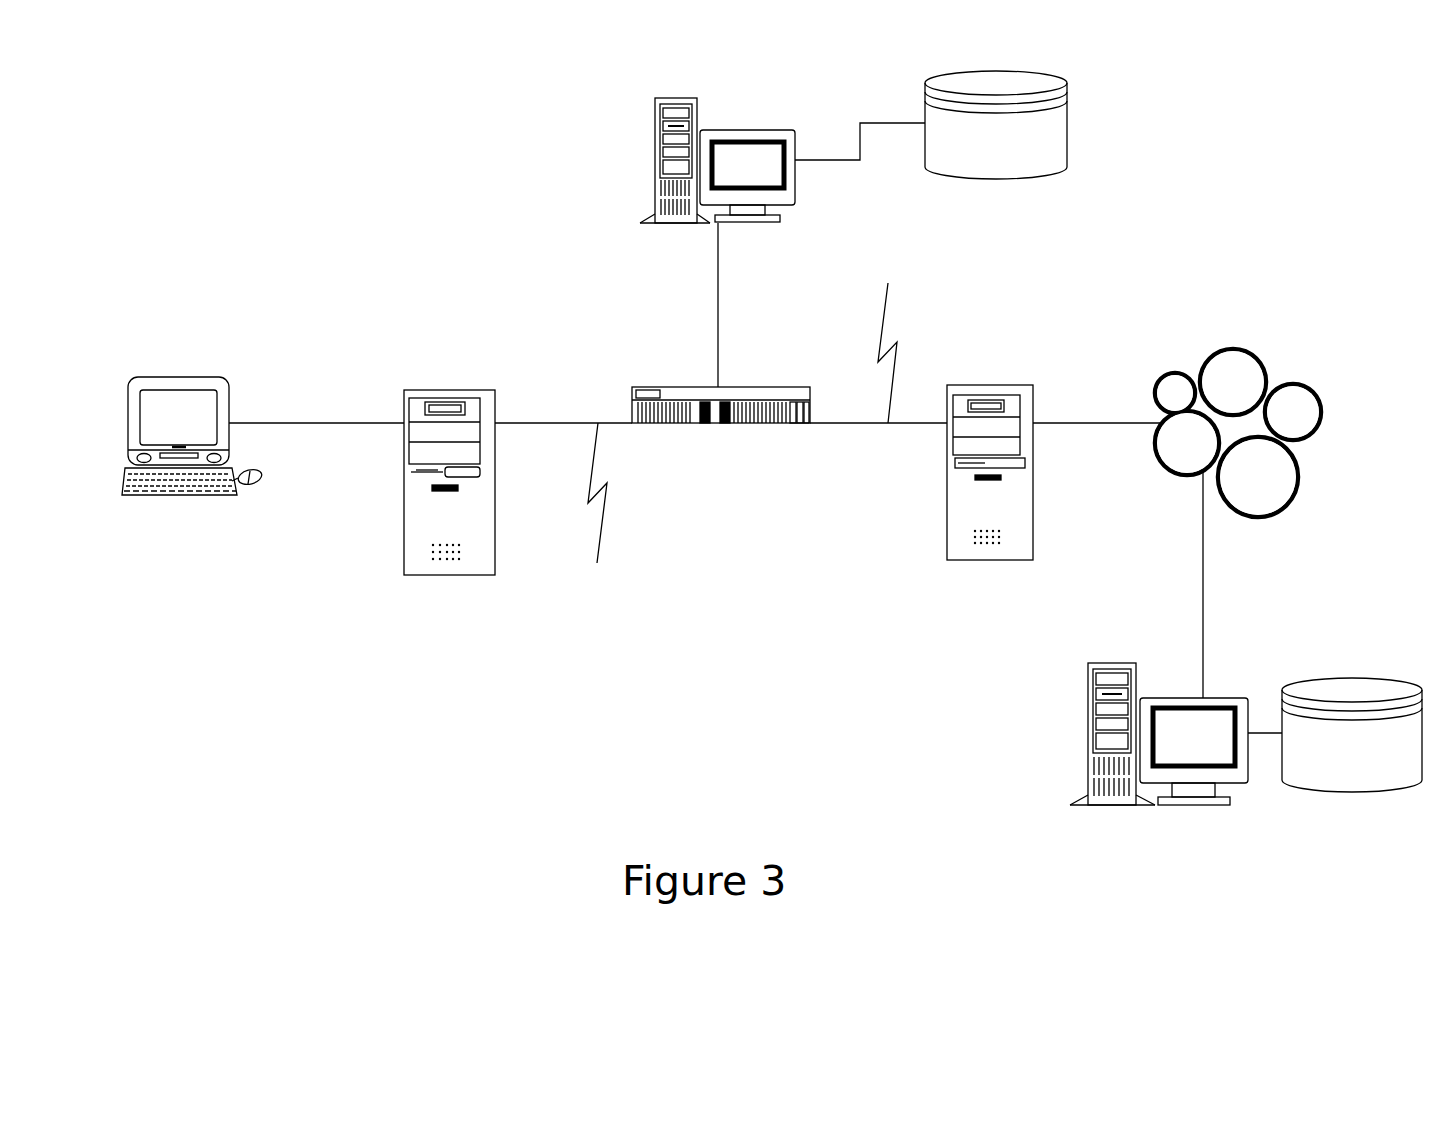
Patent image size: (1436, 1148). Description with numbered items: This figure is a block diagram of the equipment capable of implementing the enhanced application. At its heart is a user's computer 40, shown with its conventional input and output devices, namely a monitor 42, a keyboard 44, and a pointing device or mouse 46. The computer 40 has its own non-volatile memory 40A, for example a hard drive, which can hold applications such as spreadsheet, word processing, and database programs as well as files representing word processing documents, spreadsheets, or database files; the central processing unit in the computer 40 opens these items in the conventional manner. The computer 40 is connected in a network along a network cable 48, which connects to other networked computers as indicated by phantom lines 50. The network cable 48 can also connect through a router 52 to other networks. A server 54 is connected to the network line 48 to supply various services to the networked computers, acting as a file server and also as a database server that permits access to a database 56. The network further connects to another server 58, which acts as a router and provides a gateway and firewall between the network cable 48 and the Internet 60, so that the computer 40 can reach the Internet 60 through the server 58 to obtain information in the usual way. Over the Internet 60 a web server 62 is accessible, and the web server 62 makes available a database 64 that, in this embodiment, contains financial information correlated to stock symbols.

The user's computer 40 is at (437, 388).
The non-volatile memory 40A is at (440, 530).
The monitor 42 is at (178, 373).
The keyboard 44 is at (160, 500).
The pointing device (mouse) 46 is at (248, 492).
The network cable 48 is at (555, 421).
The phantom lines 50 is at (616, 530).
The router 52 is at (682, 386).
The server 54 is at (655, 160).
The database 56 is at (1069, 120).
The server 58 is at (978, 565).
The Internet 60 is at (1253, 350).
The web server 62 is at (1085, 738).
The database 64 is at (1350, 675).